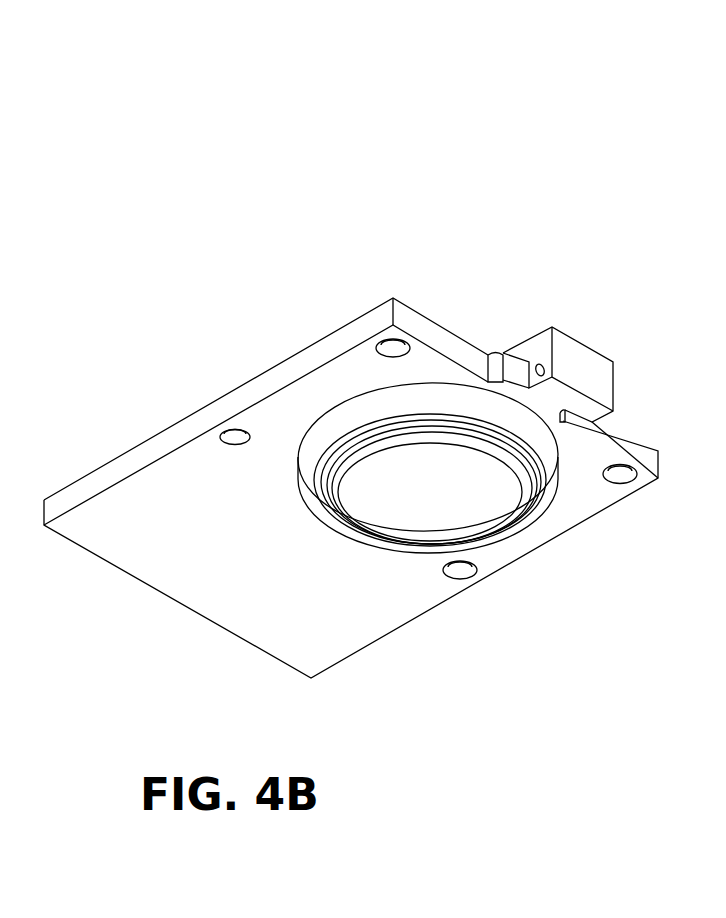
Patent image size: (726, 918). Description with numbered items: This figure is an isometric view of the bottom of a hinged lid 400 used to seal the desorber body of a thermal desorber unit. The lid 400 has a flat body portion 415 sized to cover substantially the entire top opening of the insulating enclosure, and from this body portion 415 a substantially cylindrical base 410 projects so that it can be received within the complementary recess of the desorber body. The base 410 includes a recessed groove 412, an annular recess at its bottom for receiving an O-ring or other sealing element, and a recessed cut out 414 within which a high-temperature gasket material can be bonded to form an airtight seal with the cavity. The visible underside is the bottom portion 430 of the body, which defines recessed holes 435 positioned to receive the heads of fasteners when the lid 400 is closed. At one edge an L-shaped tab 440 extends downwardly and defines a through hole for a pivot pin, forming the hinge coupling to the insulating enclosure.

The lid 400 is at (107, 120).
The base 410 is at (557, 462).
The recessed groove 412 is at (505, 537).
The recessed cut out 414 is at (388, 516).
The body portion 415 is at (68, 485).
The bottom portion 430 is at (227, 572).
The recessed holes 435 is at (383, 340).
The tab 440 is at (588, 343).